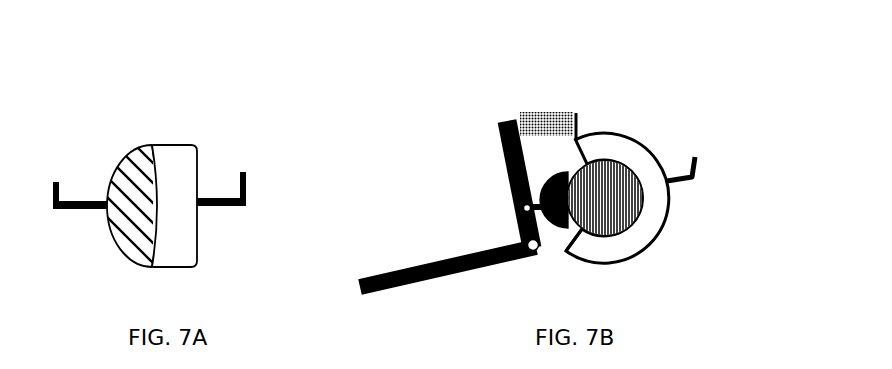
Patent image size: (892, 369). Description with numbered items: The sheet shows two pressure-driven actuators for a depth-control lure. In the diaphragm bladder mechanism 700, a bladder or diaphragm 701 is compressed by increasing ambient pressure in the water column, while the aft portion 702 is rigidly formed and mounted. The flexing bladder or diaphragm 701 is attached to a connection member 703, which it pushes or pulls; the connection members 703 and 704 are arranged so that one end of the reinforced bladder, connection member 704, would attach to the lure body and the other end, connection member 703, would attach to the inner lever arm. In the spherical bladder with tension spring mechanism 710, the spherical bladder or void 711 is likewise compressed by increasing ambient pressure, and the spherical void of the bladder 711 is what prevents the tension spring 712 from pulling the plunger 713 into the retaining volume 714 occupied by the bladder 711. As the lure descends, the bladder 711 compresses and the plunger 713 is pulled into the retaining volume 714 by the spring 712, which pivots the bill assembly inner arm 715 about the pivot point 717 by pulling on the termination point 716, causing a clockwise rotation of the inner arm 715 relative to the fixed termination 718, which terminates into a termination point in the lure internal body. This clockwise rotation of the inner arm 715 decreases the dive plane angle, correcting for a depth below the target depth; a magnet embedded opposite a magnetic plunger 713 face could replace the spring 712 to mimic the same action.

In FIG. 7A, the diaphragm bladder mechanism 700 is at (151, 163).
In FIG. 7A, the bladder or diaphragm 701 is at (108, 178).
In FIG. 7A, the aft portion 702 is at (183, 185).
In FIG. 7A, the connection member 703 is at (90, 200).
In FIG. 7A, the connection member 704 is at (215, 197).
In FIG. 7B, the spherical bladder with tension spring mechanism 710 is at (560, 163).
In FIG. 7B, the spherical bladder or void 711 is at (627, 167).
In FIG. 7B, the tension spring 712 is at (560, 110).
In FIG. 7B, the plunger 713 is at (577, 240).
In FIG. 7B, the retaining volume 714 is at (650, 205).
In FIG. 7B, the bill assembly inner arm 715 is at (510, 182).
In FIG. 7B, the termination point 716 is at (517, 203).
In FIG. 7B, the pivot point 717 is at (525, 257).
In FIG. 7B, the fixed termination 718 is at (697, 168).